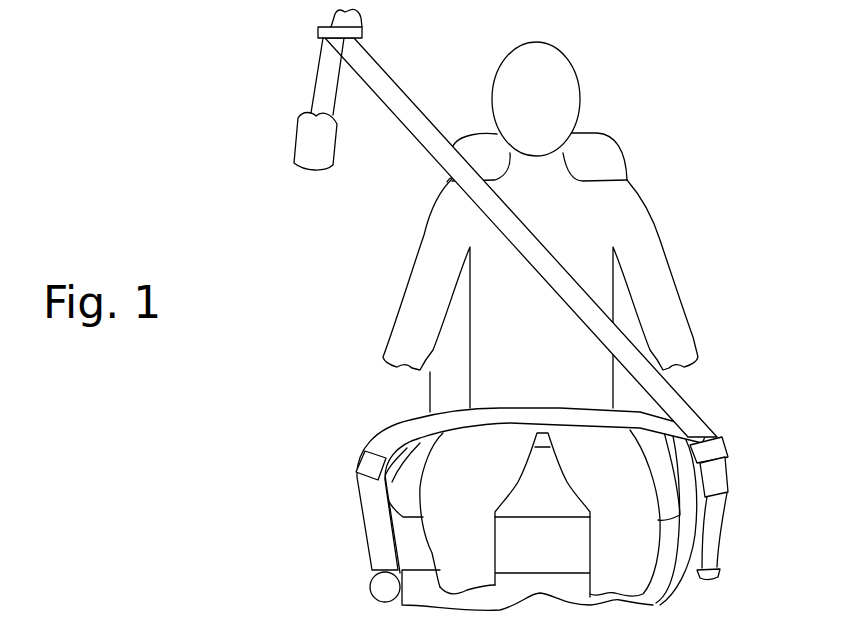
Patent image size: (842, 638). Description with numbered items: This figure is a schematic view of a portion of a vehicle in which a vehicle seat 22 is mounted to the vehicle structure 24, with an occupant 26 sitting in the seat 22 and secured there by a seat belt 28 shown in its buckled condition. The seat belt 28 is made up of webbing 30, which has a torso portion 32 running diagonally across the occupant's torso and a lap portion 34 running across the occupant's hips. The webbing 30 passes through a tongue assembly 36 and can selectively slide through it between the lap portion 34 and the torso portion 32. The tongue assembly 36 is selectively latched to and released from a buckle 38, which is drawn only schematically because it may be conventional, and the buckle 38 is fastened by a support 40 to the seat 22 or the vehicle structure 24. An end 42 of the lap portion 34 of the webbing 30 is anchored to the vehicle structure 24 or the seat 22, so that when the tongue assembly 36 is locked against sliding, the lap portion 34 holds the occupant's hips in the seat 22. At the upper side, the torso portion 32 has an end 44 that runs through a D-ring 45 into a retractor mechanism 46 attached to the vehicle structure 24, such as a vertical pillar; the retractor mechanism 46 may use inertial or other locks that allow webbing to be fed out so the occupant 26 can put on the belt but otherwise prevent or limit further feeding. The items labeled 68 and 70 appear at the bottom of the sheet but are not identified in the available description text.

The vehicle seat 22 is at (597, 132).
The vehicle structure 24 is at (602, 607).
The occupant 26 is at (553, 44).
The seat belt 28 is at (393, 80).
The webbing 30 is at (553, 257).
The torso portion 32 is at (471, 201).
The lap portion 34 is at (487, 406).
The tongue assembly 36 is at (718, 428).
The buckle 38 is at (728, 476).
The support 40 is at (713, 547).
The end of the lap portion 42 is at (365, 540).
The end of the torso portion 44 is at (316, 80).
The D-ring 45 is at (333, 13).
The retractor mechanism 46 is at (300, 168).
The lower anchor 68 is at (64, 632).
The lower anchor 70 is at (167, 632).